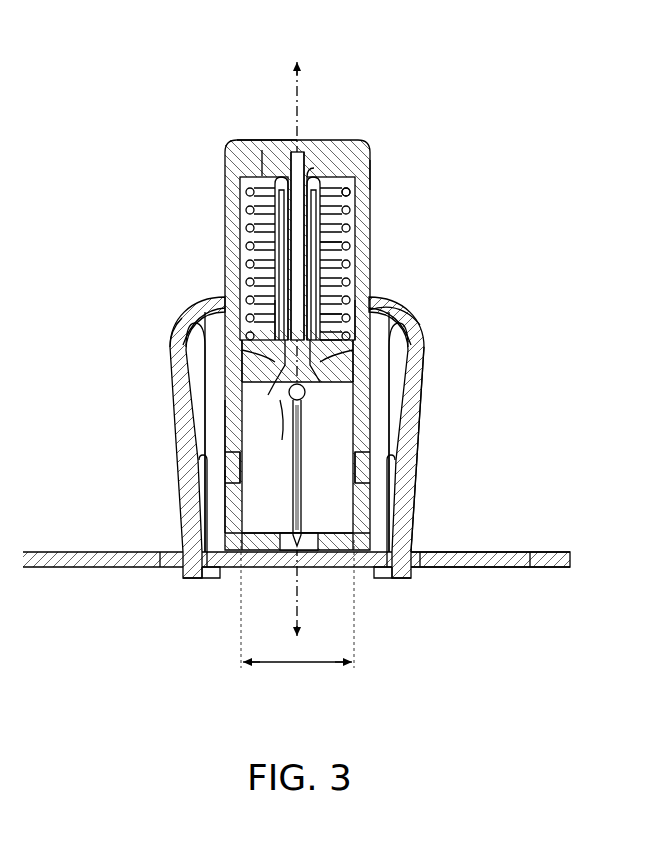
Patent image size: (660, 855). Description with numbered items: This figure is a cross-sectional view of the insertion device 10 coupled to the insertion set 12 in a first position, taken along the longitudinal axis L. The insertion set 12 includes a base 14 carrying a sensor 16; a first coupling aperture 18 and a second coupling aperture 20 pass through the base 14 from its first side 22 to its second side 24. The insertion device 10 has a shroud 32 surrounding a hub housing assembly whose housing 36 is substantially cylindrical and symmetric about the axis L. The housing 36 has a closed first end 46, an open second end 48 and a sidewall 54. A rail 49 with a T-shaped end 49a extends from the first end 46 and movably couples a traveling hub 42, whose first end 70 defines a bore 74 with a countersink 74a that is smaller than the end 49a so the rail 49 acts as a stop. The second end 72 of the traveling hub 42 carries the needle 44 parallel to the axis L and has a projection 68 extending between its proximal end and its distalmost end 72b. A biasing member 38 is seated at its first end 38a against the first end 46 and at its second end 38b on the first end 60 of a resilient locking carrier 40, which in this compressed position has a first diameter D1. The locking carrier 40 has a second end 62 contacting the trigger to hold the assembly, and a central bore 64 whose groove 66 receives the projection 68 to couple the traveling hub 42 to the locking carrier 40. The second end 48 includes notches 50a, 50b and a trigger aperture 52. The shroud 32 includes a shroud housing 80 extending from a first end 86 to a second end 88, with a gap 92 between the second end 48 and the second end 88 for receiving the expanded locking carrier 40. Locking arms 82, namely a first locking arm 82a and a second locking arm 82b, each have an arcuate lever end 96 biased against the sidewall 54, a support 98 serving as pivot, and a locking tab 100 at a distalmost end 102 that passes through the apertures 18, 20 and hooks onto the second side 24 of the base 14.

The insertion device 10 is at (492, 175).
The insertion set 12 is at (534, 512).
The base 14 is at (570, 550).
The sensor 16 is at (303, 488).
The first coupling aperture 18 is at (180, 558).
The second coupling aperture 20 is at (413, 558).
The first side 22 is at (545, 552).
The second side 24 is at (547, 567).
The shroud 32 is at (492, 413).
The housing 36 is at (397, 147).
The biasing member 38 is at (358, 215).
The first end of biasing member 38a is at (352, 190).
The second end of biasing member 38b is at (245, 336).
The locking carrier 40 is at (360, 368).
The traveling hub 42 is at (320, 182).
The needle 44 is at (262, 513).
The first end of housing 46 is at (235, 135).
The second end of housing 48 is at (372, 502).
The rail 49 is at (342, 246).
The T-shaped end of rail 49a is at (352, 318).
The first notch 50a is at (238, 480).
The second notch 50b is at (360, 480).
The trigger aperture 52 is at (302, 410).
The sidewall 54 is at (232, 430).
The first end of locking carrier 60 is at (395, 338).
The second end of locking carrier 62 is at (360, 382).
The central bore 64 is at (245, 380).
The groove 66 is at (245, 352).
The projection 68 is at (272, 330).
The first end of traveling hub 70 is at (277, 170).
The second end of traveling hub 72 is at (275, 384).
The distalmost end 72b is at (283, 430).
The bore 74 is at (280, 200).
The countersink 74a is at (298, 180).
The shroud housing 80 is at (324, 437).
The locking arms 82 is at (165, 320).
The first locking arm 82a is at (175, 536).
The second locking arm 82b is at (420, 532).
The first end of shroud housing 86 is at (372, 310).
The second end of shroud housing 88 is at (355, 552).
The gap 92 is at (250, 540).
The lever end 96 is at (210, 310).
The support 98 is at (240, 462).
The locking tab 100 is at (200, 582).
The distalmost end 102 is at (185, 572).
The longitudinal axis L is at (299, 615).
The first diameter D1 is at (292, 663).